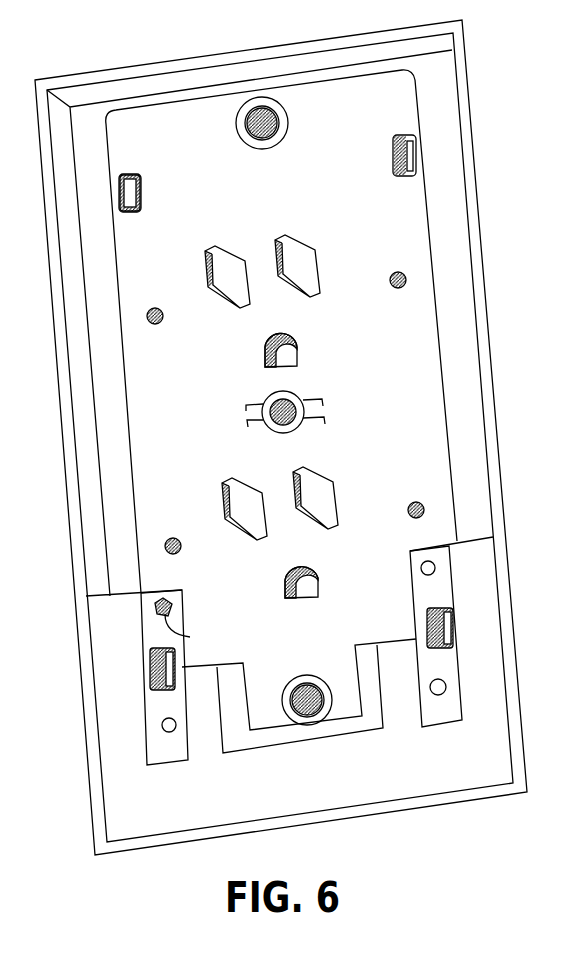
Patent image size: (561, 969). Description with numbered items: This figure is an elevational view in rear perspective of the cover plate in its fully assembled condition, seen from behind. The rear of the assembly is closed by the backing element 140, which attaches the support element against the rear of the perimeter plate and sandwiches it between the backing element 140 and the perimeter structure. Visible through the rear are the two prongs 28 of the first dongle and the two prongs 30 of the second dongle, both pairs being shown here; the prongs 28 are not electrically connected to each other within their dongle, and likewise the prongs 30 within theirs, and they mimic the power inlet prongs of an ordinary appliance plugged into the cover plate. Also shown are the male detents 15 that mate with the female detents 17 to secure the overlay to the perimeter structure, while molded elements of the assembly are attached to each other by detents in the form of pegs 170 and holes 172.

The backing element 140 is at (412, 767).
The male detents 15 is at (118, 174).
The female detents 17 is at (142, 193).
The prongs 28 is at (302, 255).
The prongs 30 is at (318, 493).
The pegs 170 is at (173, 597).
The holes 172 is at (190, 637).